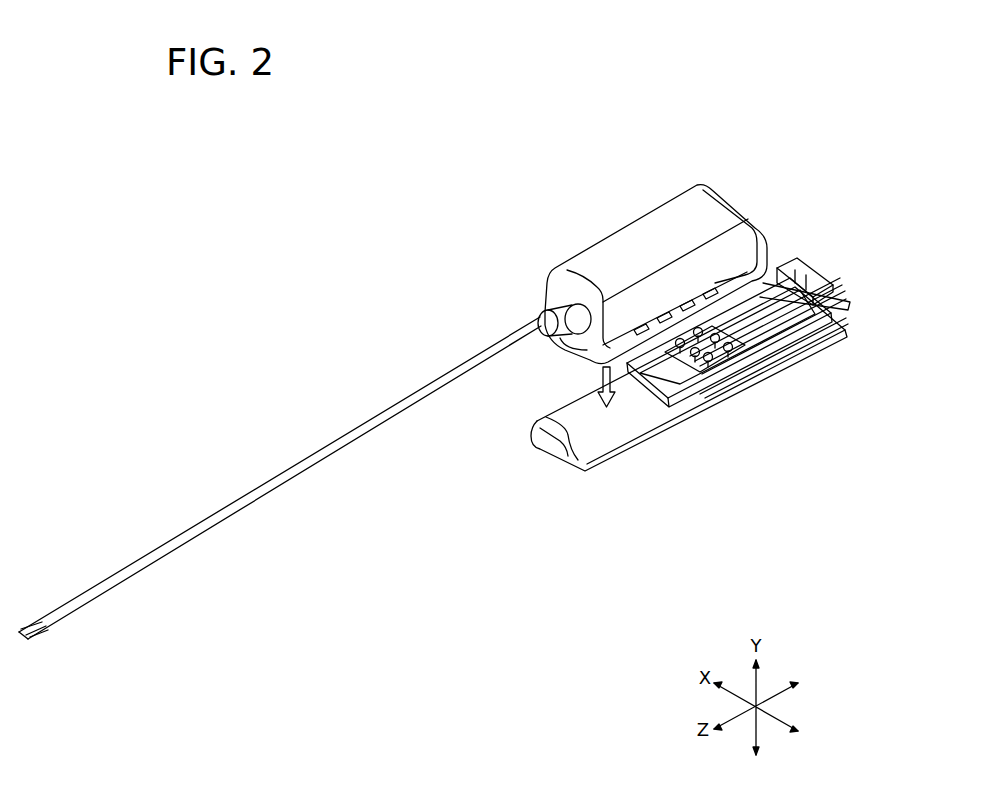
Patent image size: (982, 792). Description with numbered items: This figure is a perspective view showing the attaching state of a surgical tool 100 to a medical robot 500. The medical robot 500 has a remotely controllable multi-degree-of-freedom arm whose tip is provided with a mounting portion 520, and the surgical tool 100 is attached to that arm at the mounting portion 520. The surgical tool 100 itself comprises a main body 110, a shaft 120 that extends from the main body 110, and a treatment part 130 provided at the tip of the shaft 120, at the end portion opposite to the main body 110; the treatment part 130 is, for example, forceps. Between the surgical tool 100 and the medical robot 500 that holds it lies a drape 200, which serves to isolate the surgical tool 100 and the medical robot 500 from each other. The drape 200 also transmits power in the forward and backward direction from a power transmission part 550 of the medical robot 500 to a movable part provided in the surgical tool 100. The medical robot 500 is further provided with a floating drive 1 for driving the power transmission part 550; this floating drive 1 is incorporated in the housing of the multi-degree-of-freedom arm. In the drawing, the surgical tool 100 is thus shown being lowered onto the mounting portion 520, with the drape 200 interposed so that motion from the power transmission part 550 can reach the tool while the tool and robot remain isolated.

The floating drive 1 is at (815, 222).
The surgical tool 100 is at (645, 174).
The main body 110 is at (602, 238).
The shaft 120 is at (333, 440).
The treatment part 130 is at (47, 612).
The drape 200 is at (563, 367).
The medical robot 500 is at (742, 137).
The mounting portion 520 is at (613, 425).
The power transmission part 550 is at (683, 372).